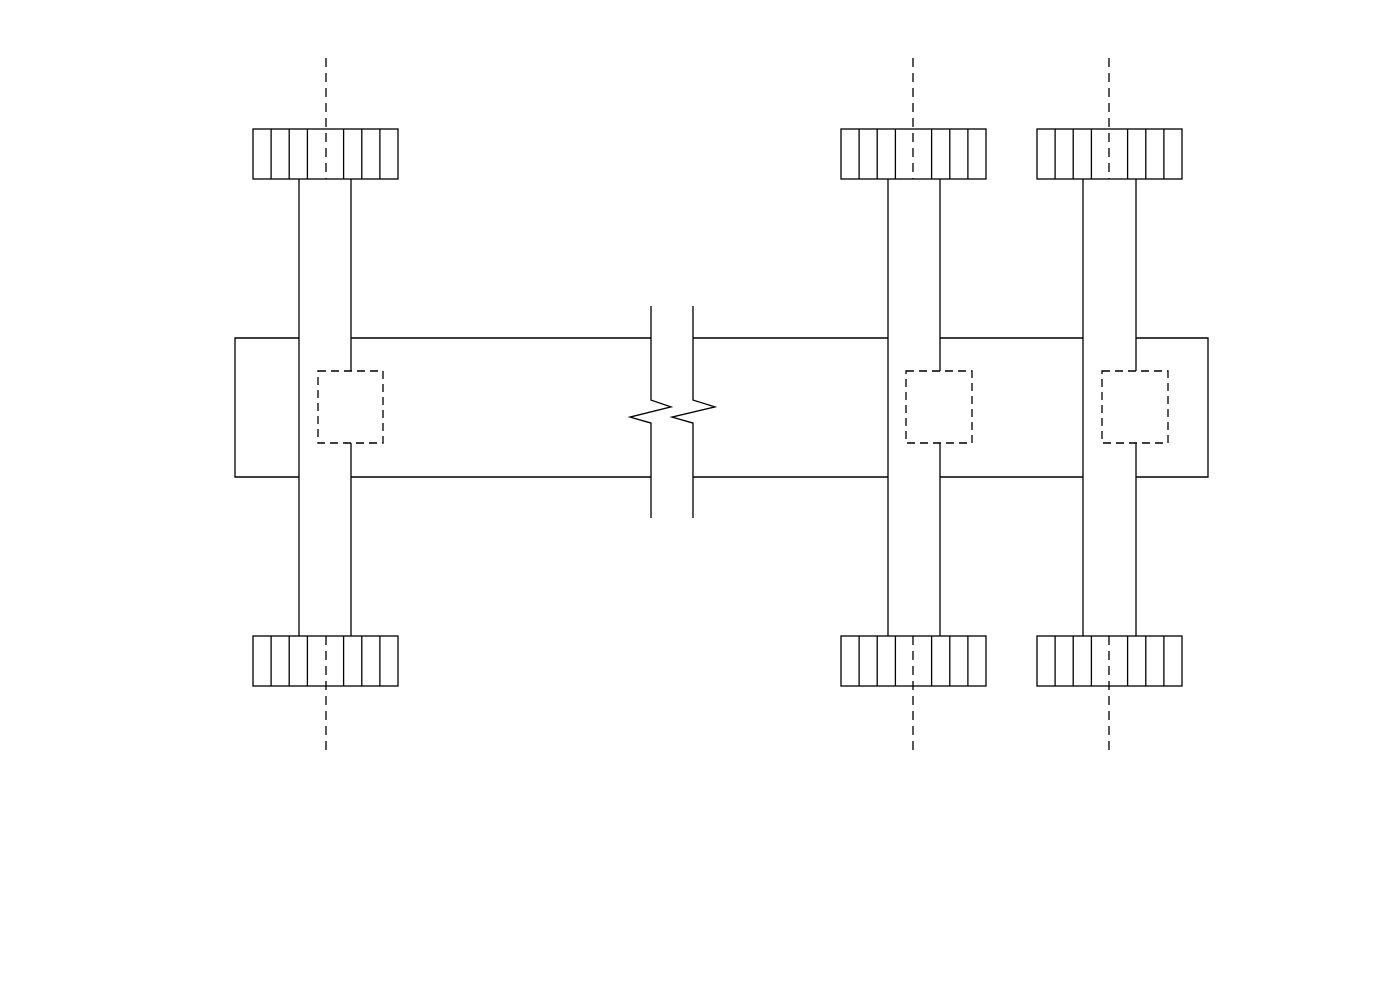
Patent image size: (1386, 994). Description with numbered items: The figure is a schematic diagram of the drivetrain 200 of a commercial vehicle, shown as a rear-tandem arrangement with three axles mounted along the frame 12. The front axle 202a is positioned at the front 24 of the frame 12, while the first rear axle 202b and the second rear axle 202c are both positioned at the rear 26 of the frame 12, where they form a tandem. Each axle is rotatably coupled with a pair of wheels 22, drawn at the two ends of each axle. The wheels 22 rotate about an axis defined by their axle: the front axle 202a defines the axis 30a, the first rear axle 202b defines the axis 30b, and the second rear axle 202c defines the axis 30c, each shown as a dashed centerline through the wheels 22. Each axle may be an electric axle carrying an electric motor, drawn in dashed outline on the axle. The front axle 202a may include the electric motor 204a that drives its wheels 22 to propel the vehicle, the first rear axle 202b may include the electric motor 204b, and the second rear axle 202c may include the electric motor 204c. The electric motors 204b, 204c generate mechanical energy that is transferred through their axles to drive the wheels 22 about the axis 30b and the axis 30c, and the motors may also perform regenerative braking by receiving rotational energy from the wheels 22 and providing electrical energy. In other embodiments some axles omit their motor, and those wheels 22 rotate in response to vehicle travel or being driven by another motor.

The drivetrain 200 is at (198, 108).
The frame 12 is at (537, 337).
The wheels 22 is at (398, 150).
The front 24 is at (170, 404).
The rear 26 is at (1300, 412).
The axis 30a is at (326, 93).
The axis 30b is at (913, 93).
The axis 30c is at (1109, 93).
The front axle 202a is at (385, 530).
The first rear axle 202b is at (965, 532).
The second rear axle 202c is at (1172, 532).
The electric motor 204a is at (383, 408).
The electric motor 204b is at (972, 408).
The electric motor 204c is at (1168, 408).